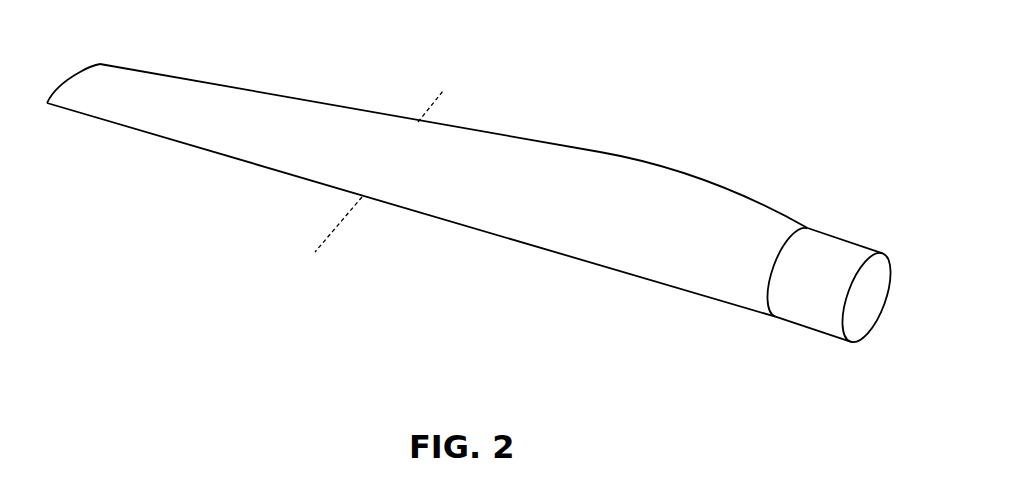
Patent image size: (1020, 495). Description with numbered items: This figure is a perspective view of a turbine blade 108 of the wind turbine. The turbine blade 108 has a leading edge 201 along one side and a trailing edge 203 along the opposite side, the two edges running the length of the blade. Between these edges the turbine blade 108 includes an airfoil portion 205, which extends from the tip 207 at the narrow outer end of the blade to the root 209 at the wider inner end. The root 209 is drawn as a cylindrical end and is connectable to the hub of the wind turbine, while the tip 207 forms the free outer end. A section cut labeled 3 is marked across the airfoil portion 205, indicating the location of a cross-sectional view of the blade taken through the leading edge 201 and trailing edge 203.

The turbine blade 108 is at (468, 188).
The leading edge 201 is at (218, 156).
The trailing edge 203 is at (238, 88).
The airfoil portion 205 is at (608, 178).
The tip 207 is at (75, 73).
The root 209 is at (828, 253).
The section line 3- 3 is at (443, 91).